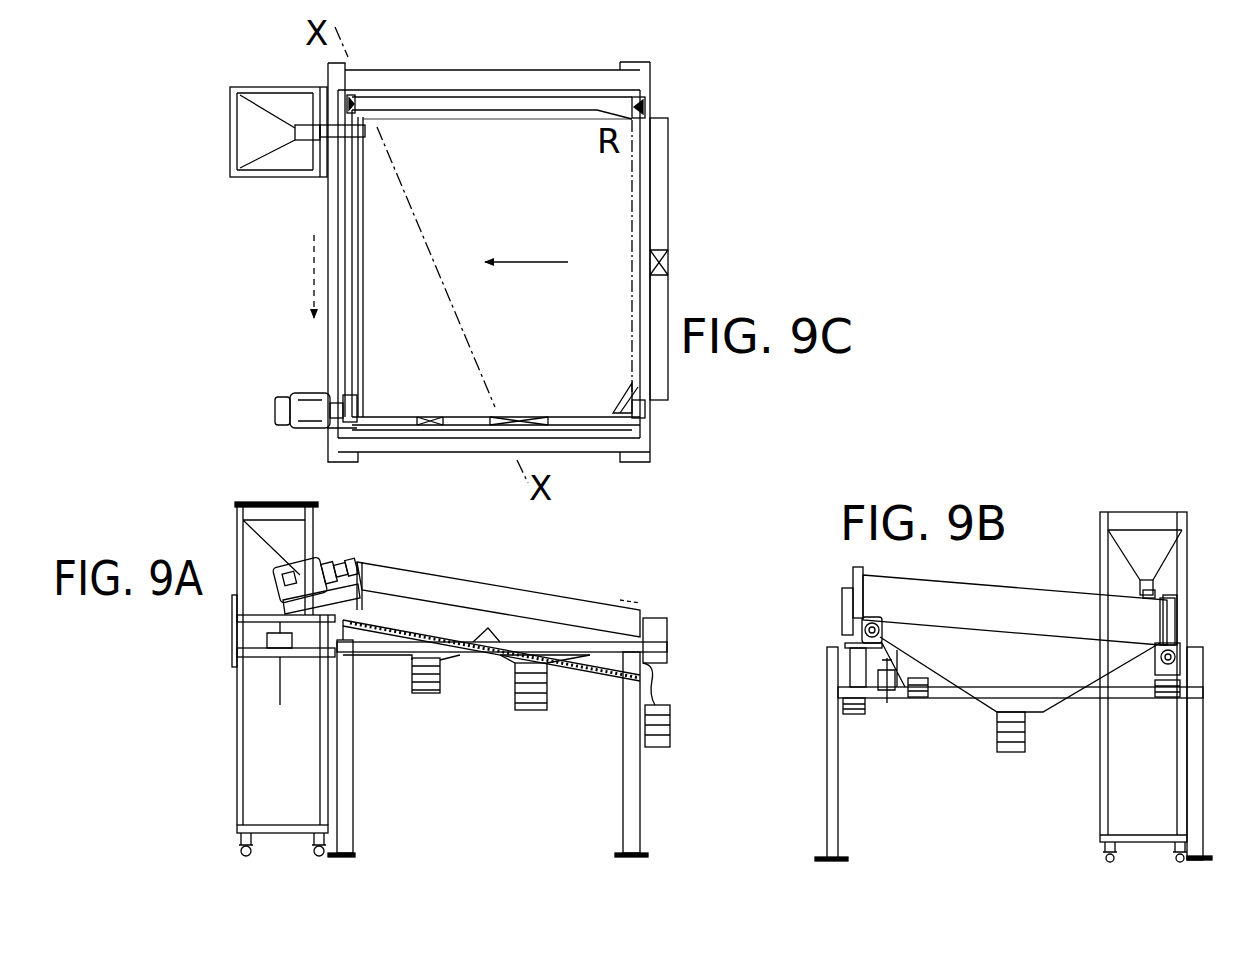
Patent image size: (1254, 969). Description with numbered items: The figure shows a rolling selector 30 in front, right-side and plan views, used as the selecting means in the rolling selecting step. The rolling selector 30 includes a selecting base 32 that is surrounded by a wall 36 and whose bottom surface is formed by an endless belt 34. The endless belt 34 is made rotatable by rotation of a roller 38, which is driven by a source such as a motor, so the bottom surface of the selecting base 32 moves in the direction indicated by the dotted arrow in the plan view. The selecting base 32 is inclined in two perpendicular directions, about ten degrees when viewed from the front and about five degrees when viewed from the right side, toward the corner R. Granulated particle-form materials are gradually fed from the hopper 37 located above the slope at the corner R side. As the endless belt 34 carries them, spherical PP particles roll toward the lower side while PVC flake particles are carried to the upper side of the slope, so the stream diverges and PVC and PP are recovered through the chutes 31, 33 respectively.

In FIG. 9A, the rolling selector 30 is at (258, 493).
In FIG. 9C, the chute 31 is at (452, 423).
In FIG. 9A, the chute 31 is at (403, 623).
In FIG. 9C, the selecting base 32 is at (400, 233).
In FIG. 9C, the chute 33 is at (663, 232).
In FIG. 9A, the chute 33 is at (558, 663).
In FIG. 9B, the chute 33 is at (975, 675).
In FIG. 9C, the endless belt 34 is at (600, 195).
In FIG. 9A, the wall 36 is at (563, 597).
In FIG. 9C, the hopper 37 is at (267, 165).
In FIG. 9B, the hopper 37 is at (1155, 545).
In FIG. 9A, the roller 38 is at (348, 590).